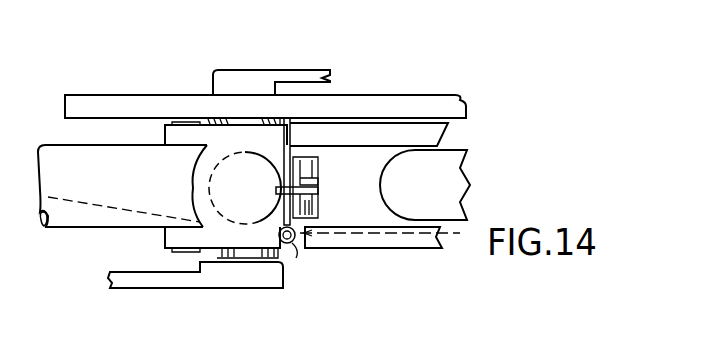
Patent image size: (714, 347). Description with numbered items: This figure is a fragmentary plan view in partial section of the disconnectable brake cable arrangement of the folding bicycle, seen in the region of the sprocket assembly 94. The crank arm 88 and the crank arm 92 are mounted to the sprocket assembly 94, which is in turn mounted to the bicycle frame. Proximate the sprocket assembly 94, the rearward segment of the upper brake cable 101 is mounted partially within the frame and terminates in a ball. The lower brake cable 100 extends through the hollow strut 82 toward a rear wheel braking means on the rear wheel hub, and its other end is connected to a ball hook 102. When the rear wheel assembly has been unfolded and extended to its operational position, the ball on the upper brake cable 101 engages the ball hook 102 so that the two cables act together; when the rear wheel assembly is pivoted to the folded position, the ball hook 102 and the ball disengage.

The sprocket assembly 94 is at (134, 101).
The crank arm 88 is at (287, 70).
The upper brake cable 101 is at (245, 188).
The ball hook 102 is at (288, 244).
The lower brake cable 100 is at (371, 238).
The hollow strut 82 is at (403, 242).
The crank arm 92 is at (212, 283).